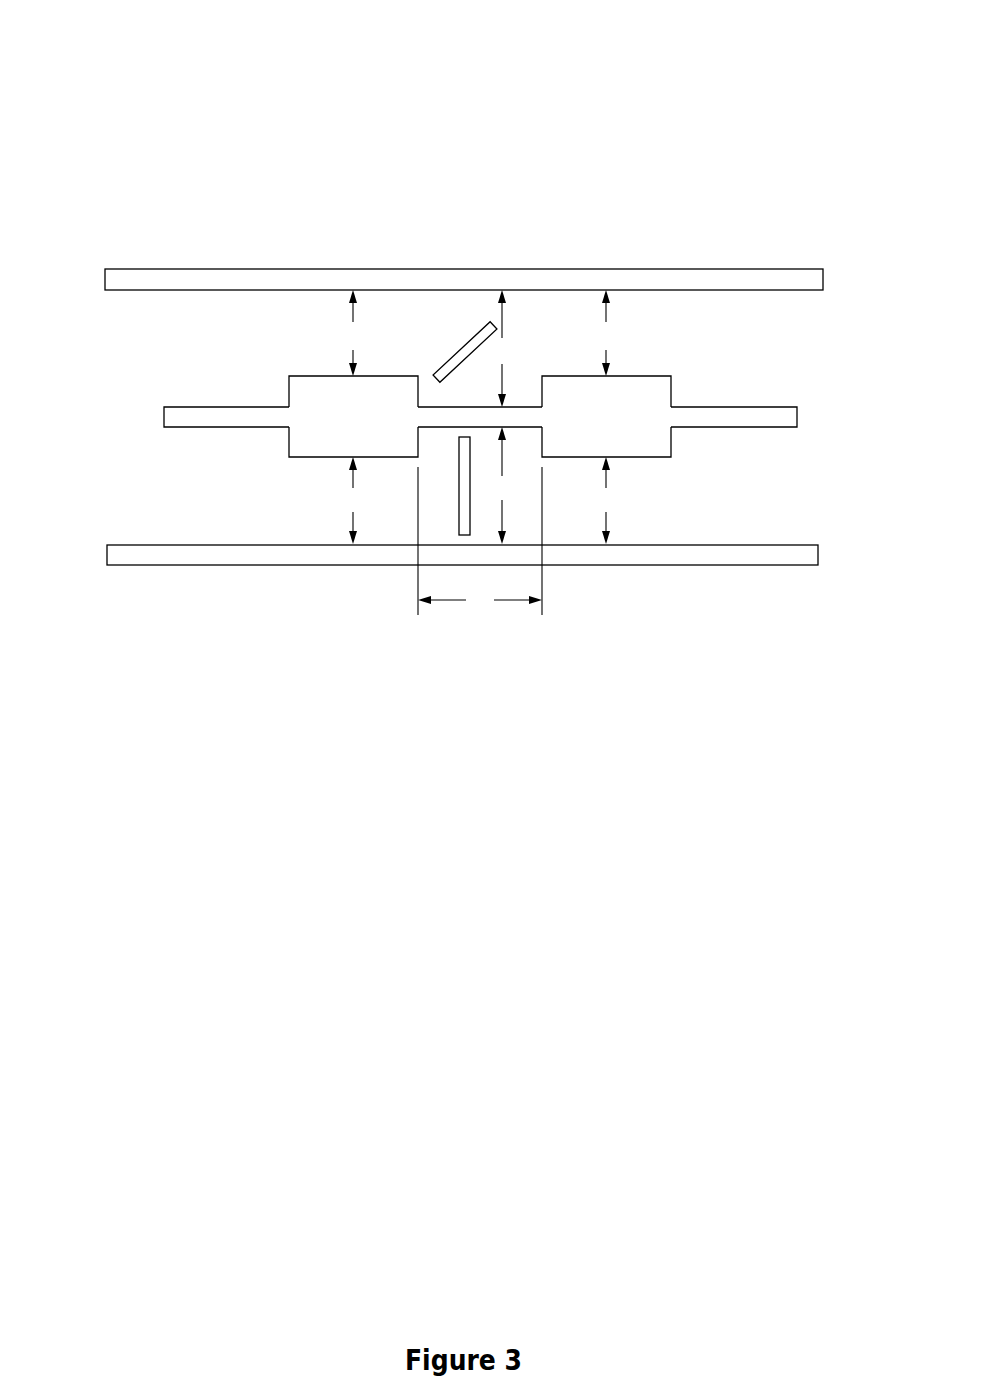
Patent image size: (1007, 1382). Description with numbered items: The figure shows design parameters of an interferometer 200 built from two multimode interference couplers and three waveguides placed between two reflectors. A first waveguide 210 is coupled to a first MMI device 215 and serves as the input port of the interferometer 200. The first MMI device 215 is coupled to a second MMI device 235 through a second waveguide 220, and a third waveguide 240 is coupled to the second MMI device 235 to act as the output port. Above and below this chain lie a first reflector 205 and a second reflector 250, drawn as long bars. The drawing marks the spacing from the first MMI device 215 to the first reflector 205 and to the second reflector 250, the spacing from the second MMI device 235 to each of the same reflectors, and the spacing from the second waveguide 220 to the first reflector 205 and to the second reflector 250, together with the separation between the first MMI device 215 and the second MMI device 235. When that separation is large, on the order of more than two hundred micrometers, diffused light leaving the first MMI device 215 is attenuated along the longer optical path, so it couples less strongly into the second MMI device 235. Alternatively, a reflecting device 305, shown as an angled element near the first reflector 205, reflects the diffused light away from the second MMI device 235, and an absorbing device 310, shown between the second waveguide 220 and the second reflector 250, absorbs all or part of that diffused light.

The interferometer 200 is at (446, 316).
The first reflector 205 is at (105, 282).
The first waveguide 210 is at (222, 428).
The first MMI device 215 is at (291, 458).
The second waveguide 220 is at (523, 407).
The second MMI device 235 is at (660, 458).
The third waveguide 240 is at (740, 428).
The second reflector 250 is at (820, 553).
The reflecting device 305 is at (472, 330).
The absorbing device 310 is at (459, 528).